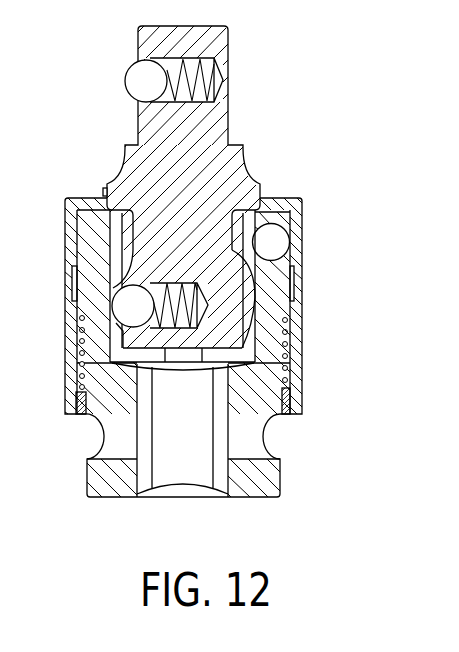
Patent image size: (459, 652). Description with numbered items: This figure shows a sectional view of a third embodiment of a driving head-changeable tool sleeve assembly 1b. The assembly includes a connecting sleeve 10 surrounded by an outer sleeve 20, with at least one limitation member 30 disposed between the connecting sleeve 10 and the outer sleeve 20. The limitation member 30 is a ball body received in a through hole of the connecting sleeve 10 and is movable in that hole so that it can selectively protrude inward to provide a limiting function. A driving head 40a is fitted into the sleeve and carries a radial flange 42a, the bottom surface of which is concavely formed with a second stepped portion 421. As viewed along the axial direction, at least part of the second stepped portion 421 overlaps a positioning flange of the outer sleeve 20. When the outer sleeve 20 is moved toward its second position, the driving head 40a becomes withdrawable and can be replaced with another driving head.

The driving head-changeable tool sleeve assembly 1b is at (214, 258).
The connecting sleeve 10 is at (279, 286).
The outer sleeve 20 is at (300, 336).
The limitation member 30 is at (277, 239).
The driving head 40a is at (212, 42).
The radial flange 42a is at (259, 186).
The second stepped portion 421 is at (105, 191).